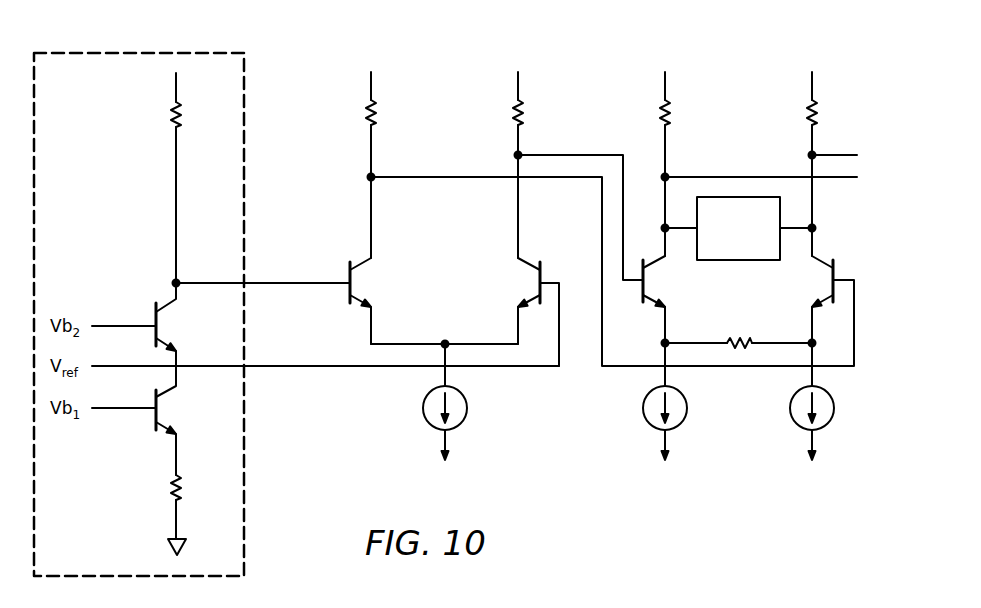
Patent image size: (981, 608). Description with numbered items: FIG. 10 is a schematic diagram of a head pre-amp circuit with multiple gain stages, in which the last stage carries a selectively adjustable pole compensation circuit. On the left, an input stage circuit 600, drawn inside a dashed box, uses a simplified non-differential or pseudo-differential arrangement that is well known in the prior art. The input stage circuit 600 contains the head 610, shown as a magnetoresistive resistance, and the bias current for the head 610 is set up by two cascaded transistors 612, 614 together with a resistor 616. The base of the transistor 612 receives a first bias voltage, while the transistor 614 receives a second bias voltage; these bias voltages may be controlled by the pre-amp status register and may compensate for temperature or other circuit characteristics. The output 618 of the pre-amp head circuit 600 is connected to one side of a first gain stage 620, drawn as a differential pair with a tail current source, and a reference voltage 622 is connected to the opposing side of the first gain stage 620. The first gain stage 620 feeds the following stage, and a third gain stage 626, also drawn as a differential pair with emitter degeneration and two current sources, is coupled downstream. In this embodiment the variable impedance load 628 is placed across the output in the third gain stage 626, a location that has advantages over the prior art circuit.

The input stage circuit 600 is at (118, 193).
The head 610 is at (182, 488).
The transistor 612 is at (152, 429).
The transistor 614 is at (152, 310).
The resistor 616 is at (170, 112).
The output 618 is at (308, 281).
The first gain stage 620 is at (429, 76).
The reference voltage Vref 622 is at (329, 368).
The third gain stage 626 is at (753, 76).
The variable impedance load 628 is at (758, 239).